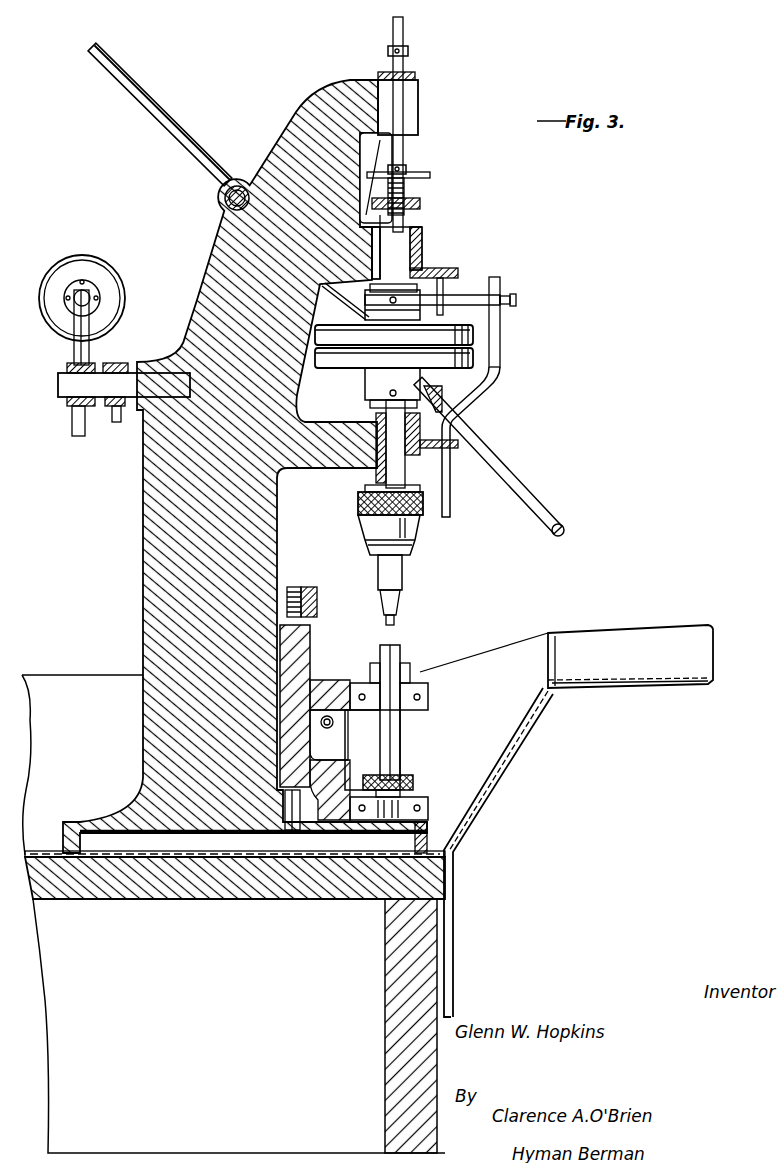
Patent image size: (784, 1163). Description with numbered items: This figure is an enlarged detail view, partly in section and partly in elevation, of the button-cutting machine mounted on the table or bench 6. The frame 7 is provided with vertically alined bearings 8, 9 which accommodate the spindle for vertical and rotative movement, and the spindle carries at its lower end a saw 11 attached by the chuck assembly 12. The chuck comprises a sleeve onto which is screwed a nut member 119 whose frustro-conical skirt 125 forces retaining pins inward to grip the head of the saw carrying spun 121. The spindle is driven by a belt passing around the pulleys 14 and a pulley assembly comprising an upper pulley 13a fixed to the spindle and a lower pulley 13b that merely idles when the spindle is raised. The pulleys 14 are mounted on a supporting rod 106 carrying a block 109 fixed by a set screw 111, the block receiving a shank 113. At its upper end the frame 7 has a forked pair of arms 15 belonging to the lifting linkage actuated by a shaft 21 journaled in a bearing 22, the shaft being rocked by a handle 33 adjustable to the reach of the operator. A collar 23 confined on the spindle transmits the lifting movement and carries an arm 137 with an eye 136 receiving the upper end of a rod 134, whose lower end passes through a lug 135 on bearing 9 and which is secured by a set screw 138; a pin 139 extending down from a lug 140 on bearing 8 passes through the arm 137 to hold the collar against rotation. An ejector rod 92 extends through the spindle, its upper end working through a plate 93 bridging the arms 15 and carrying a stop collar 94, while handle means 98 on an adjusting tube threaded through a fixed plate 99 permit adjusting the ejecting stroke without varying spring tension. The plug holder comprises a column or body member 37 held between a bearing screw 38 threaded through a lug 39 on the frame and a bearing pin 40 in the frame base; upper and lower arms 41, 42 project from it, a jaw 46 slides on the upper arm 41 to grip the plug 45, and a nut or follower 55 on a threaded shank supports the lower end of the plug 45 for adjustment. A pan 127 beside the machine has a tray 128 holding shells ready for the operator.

The table or bench 6 is at (310, 888).
The frame 7 is at (145, 505).
The bearing 8 is at (420, 270).
The bearing 9 is at (422, 468).
The saw 11 is at (401, 616).
The chuck assembly 12 is at (432, 537).
The upper pulley 13a is at (472, 340).
The lower pulley 13b is at (472, 362).
The pulleys 14 is at (108, 278).
The forked pair of arms 15 is at (418, 108).
The shaft 21 is at (224, 199).
The bearing 22 is at (236, 186).
The collar 23 is at (397, 253).
The handle 33 is at (494, 464).
The column or body member 37 is at (302, 660).
The bearing screw 38 is at (300, 588).
The lug 39 is at (316, 593).
The bearing pin 40 is at (294, 832).
The upper arm 41 is at (430, 698).
The lower arm 42 is at (420, 806).
The plug 45 is at (403, 672).
The jaw 46 is at (425, 684).
The nut or follower 55 is at (410, 777).
The ejector rod 92 is at (397, 627).
The plate 93 is at (413, 77).
The stop collar 94 is at (410, 51).
The handle means 98 is at (418, 176).
The fixed plate 99 is at (420, 204).
The supporting rod 106 is at (63, 386).
The block 109 is at (132, 357).
The set screw 111 is at (116, 422).
The shank 113 is at (74, 348).
The nut member 119 is at (425, 503).
The saw carrying spun 121 is at (403, 580).
The frustro-conical skirt 125 is at (420, 540).
The pan 127 is at (228, 852).
The tray 128 is at (634, 640).
The rod 134 is at (496, 392).
The lug 135 is at (456, 446).
The eye 136 is at (503, 290).
The arm 137 is at (482, 294).
The set screw 138 is at (517, 303).
The pin 139 is at (424, 314).
The lug 140 is at (458, 271).